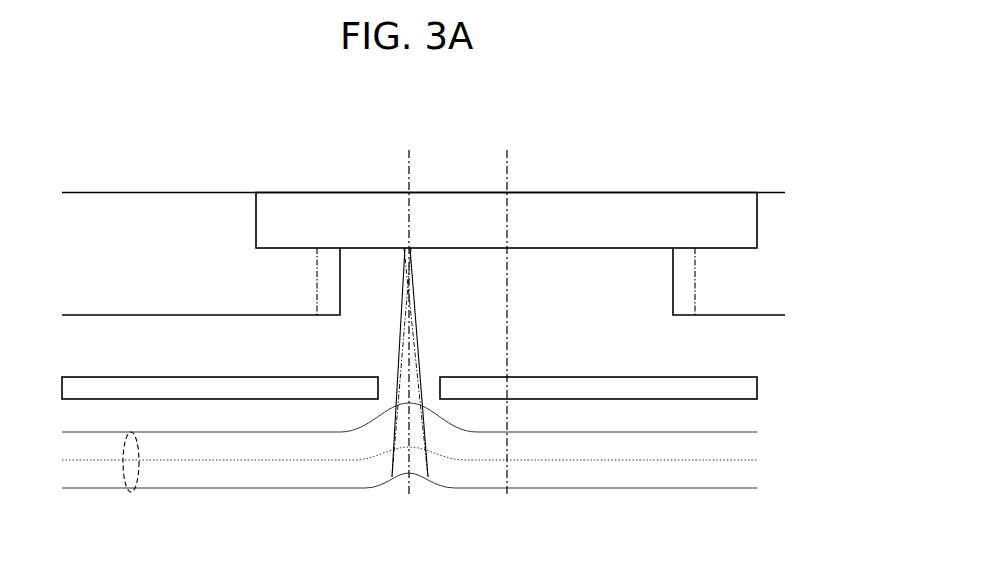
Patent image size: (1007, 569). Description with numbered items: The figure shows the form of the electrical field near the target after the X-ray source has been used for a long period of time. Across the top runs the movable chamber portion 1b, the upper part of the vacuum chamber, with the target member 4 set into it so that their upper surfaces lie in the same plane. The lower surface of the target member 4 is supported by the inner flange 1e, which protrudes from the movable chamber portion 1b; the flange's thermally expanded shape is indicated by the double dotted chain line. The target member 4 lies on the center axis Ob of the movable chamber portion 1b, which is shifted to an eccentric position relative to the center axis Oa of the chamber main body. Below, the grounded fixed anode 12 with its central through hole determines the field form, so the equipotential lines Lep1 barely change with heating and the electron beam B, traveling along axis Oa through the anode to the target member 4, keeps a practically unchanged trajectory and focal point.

The movable chamber portion 1b is at (178, 192).
The target member 4 is at (606, 192).
The inner flange 1e is at (685, 282).
The center axis of the main body portion of the chamber Oa is at (409, 308).
The center axis of the movable chamber portion Ob is at (507, 308).
The electron beam B is at (412, 340).
The fixed anode 12 is at (562, 377).
The equipotential lines Lep1 is at (131, 432).